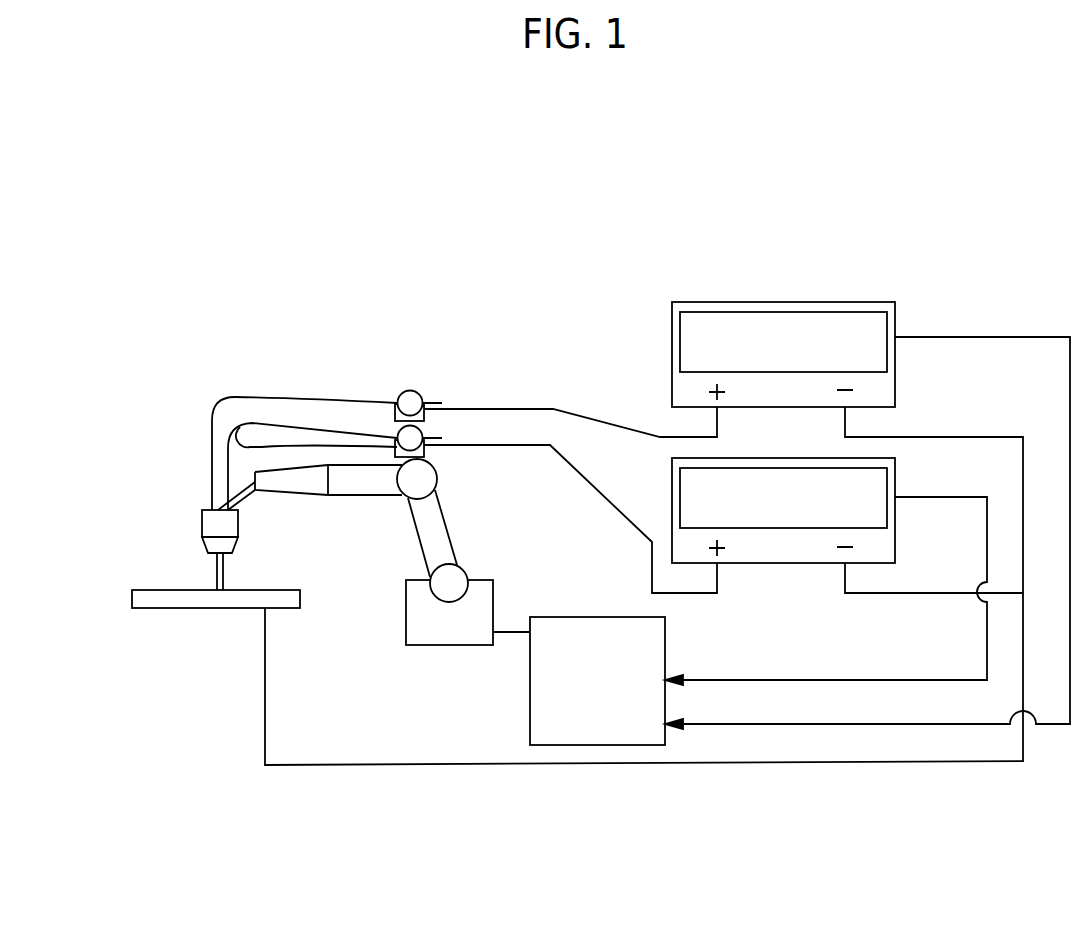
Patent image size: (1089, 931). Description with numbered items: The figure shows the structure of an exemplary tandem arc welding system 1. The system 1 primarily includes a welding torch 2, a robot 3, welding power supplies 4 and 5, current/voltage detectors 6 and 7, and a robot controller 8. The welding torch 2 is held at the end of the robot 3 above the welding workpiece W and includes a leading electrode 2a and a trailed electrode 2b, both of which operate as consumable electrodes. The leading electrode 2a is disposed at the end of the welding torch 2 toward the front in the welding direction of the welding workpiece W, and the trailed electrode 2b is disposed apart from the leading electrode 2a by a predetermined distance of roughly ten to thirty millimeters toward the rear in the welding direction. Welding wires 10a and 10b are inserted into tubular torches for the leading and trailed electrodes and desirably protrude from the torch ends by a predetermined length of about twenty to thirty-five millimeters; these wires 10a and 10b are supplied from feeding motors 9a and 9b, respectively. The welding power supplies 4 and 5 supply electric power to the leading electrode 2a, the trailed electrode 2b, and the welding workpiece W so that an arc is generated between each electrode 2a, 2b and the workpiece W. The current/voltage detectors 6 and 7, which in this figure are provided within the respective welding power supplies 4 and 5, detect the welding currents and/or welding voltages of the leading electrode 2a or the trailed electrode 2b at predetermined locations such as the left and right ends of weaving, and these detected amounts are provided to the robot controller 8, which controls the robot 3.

The tandem arc welding system 1 is at (329, 264).
The welding torch 2 is at (202, 528).
The leading electrode 2a is at (214, 560).
The trailed electrode 2b is at (227, 570).
The robot 3 is at (448, 645).
The welding power supply 4 is at (792, 354).
The welding power supply 5 is at (792, 510).
The current/voltage detector 6 is at (678, 330).
The current/voltage detector 7 is at (678, 492).
The robot controller 8 is at (665, 635).
The feeding motor 9a is at (417, 393).
The feeding motor 9b is at (421, 430).
The welding wire 10a is at (212, 405).
The welding wire 10b is at (232, 445).
The welding workpiece W is at (170, 610).